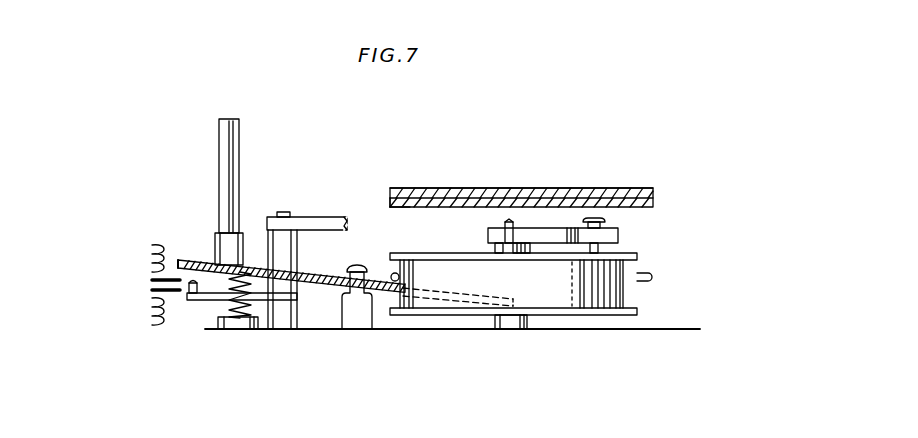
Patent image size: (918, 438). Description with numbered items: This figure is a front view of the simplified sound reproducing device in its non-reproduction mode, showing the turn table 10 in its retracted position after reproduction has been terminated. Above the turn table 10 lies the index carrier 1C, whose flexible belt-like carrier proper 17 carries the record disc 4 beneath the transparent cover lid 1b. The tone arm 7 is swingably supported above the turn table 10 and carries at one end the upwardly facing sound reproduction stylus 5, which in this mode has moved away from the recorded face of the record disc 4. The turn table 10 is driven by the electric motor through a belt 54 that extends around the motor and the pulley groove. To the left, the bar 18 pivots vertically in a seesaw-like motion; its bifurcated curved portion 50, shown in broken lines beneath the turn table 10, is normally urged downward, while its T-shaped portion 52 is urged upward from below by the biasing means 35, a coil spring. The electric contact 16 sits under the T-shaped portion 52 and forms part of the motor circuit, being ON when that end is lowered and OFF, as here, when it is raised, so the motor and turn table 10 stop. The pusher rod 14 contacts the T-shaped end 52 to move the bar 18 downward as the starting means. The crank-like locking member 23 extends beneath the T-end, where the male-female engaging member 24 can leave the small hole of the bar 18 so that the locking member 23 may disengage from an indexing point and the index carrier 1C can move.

The cover lid 1b is at (588, 188).
The index carrier 1C is at (398, 206).
The record disc 4 is at (484, 188).
The sound reproduction stylus 5 is at (509, 219).
The tone arm 7 is at (612, 232).
The turn table 10 is at (638, 255).
The pusher rod 14 is at (240, 183).
The electric contact 16 is at (142, 290).
The carrier proper 17 is at (404, 208).
The bar 18 is at (318, 277).
The locking member 23 is at (325, 218).
The male-female engaging member 24 is at (193, 283).
The biasing means 35 is at (227, 308).
The bifurcated curved portion 50 is at (443, 300).
The T-shaped portion 52 is at (178, 260).
The belt 54 is at (652, 280).